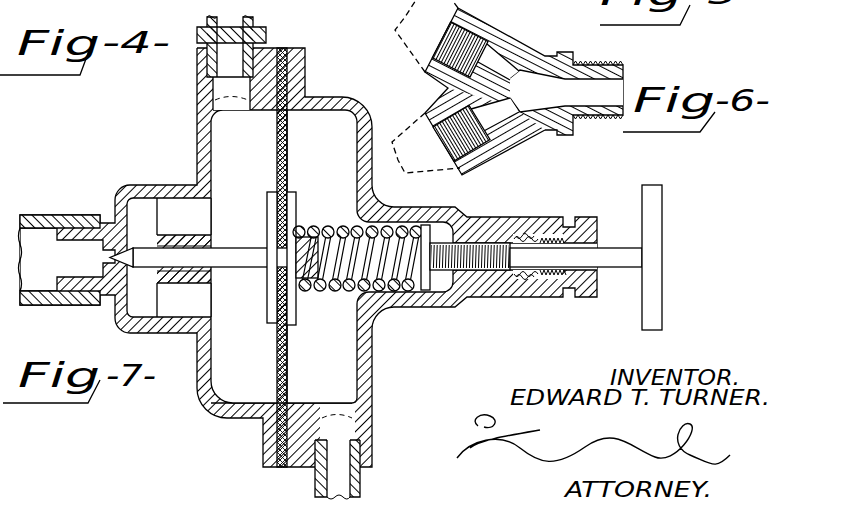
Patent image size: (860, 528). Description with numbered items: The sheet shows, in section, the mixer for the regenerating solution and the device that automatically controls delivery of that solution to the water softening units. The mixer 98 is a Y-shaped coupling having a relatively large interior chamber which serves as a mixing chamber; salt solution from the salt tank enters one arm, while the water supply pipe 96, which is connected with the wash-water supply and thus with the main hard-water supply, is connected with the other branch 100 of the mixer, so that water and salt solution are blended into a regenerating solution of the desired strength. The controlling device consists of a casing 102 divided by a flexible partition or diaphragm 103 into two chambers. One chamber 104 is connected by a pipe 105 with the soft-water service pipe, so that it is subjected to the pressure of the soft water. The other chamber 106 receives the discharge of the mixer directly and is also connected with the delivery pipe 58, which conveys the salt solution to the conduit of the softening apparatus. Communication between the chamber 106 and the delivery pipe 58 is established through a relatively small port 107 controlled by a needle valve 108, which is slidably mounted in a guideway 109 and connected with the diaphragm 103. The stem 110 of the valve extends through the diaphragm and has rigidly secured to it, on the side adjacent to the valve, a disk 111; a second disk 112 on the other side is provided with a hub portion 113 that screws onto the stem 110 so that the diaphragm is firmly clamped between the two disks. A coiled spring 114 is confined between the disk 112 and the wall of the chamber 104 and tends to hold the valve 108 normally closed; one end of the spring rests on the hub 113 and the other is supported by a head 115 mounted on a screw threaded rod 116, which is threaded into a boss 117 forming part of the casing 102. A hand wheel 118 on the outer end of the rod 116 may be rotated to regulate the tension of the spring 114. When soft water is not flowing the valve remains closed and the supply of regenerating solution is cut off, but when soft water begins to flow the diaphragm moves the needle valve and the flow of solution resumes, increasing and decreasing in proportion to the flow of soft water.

In FIG. 7, the delivery pipe 58 is at (73, 222).
In FIG. 6, the water supply pipe 96 is at (412, 132).
In FIG. 7, the mixer 98 is at (266, 42).
In FIG. 6, the mixer 98 is at (559, 93).
In FIG. 6, the branch of the mixer 100 is at (483, 153).
In FIG. 7, the casing 102 is at (372, 363).
In FIG. 7, the diaphragm 103 is at (288, 148).
In FIG. 7, the chamber 104 is at (442, 256).
In FIG. 7, the pipe 105 is at (360, 485).
In FIG. 7, the chamber 106 is at (244, 256).
In FIG. 7, the port 107 is at (110, 258).
In FIG. 7, the needle valve 108 is at (169, 257).
In FIG. 7, the guideway 109 is at (172, 246).
In FIG. 7, the stem 110 is at (283, 256).
In FIG. 7, the disk 111 is at (272, 218).
In FIG. 7, the second disk 112 is at (292, 210).
In FIG. 7, the hub portion 113 is at (307, 257).
In FIG. 7, the spring 114 is at (347, 288).
In FIG. 7, the head 115 is at (410, 248).
In FIG. 7, the screw threaded rod 116 is at (480, 243).
In FIG. 7, the boss 117 is at (498, 292).
In FIG. 7, the hand wheel 118 is at (649, 262).